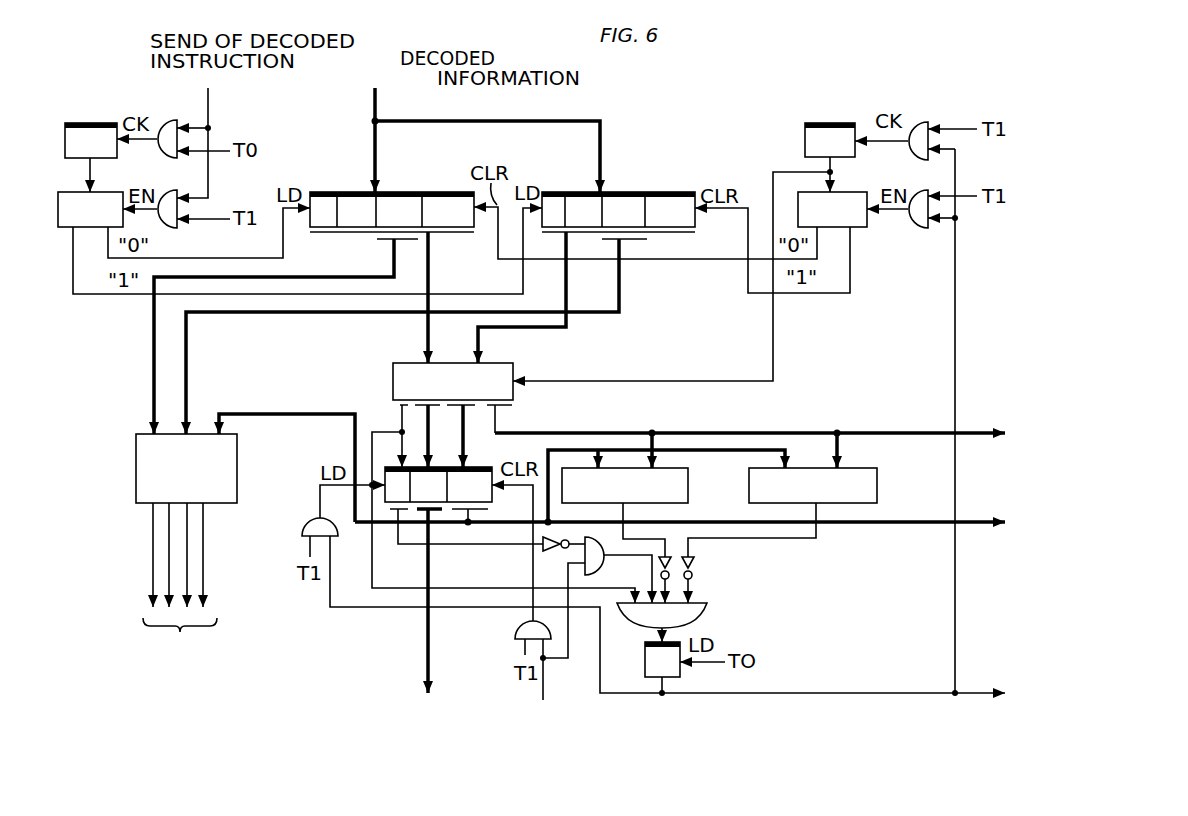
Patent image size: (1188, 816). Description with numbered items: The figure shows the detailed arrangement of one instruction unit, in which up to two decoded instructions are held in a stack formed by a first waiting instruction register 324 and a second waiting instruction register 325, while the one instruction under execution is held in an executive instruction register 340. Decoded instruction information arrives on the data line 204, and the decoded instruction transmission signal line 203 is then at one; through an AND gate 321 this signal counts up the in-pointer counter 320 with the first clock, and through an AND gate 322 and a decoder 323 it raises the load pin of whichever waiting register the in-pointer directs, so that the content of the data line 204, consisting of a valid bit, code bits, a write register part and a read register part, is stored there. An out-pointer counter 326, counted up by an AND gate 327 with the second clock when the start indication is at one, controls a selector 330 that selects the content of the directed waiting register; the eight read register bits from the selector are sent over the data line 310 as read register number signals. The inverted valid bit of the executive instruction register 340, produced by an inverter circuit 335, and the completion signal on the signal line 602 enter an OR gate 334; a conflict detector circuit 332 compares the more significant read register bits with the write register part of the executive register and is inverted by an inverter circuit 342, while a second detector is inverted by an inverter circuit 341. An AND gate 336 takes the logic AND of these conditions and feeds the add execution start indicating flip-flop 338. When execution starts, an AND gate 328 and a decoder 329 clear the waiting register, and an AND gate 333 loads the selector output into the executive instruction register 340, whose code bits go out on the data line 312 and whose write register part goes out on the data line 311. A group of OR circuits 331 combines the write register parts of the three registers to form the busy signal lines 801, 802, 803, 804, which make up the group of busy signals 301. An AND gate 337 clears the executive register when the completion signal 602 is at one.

The decoded instruction transmission signal line 203 is at (208, 100).
The data line 204 is at (375, 102).
The in-pointer counter 320 is at (88, 123).
The AND gate 321 is at (168, 122).
The AND gate 322 is at (168, 192).
The decoder 323 is at (58, 220).
The first waiting instruction register 324 is at (338, 192).
The second waiting instruction register 325 is at (632, 192).
The out-pointer counter 326 is at (818, 123).
The AND gate 327 is at (920, 122).
The AND gate 328 is at (915, 227).
The decoder 329 is at (849, 192).
The selector 330 is at (513, 365).
The group of OR circuits 331 is at (237, 463).
The conflict detector circuit 332 is at (688, 490).
The AND gate 333 is at (304, 528).
The OR gate 334 is at (601, 570).
The inverter circuit 335 is at (542, 553).
The AND gate 336 is at (708, 614).
The AND gate 337 is at (516, 630).
The add execution start indicating flip-flop 338 is at (680, 676).
The executive instruction register 340 is at (470, 467).
The inverter circuit 341 is at (696, 568).
The inverter circuit 342 is at (673, 558).
The busy signal line 801 is at (153, 529).
The busy signal line 802 is at (169, 536).
The busy signal line 803 is at (187, 551).
The busy signal line 804 is at (203, 563).
The group of busy signal lines 301 is at (627, 622).
The data line 310 is at (838, 435).
The data line 311 is at (700, 474).
The data line 312 is at (435, 626).
The add execution completion signal line 602 is at (575, 653).